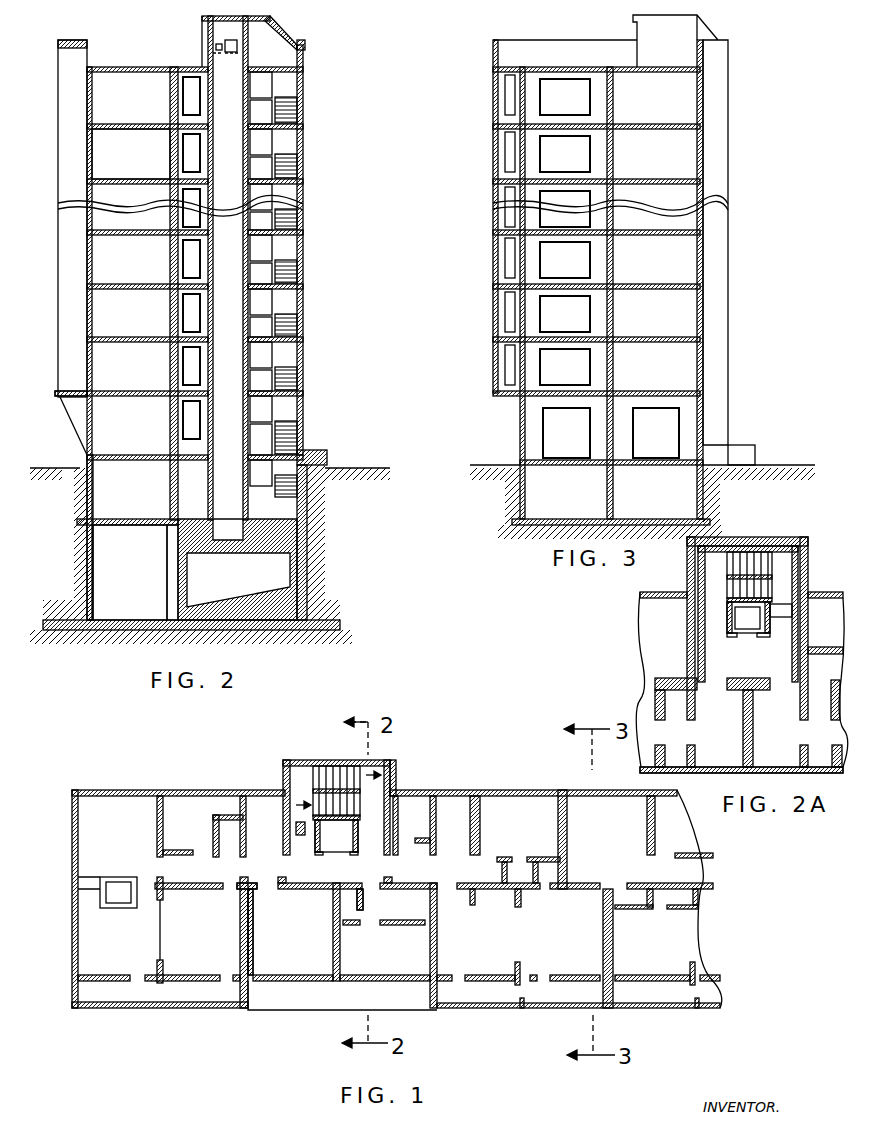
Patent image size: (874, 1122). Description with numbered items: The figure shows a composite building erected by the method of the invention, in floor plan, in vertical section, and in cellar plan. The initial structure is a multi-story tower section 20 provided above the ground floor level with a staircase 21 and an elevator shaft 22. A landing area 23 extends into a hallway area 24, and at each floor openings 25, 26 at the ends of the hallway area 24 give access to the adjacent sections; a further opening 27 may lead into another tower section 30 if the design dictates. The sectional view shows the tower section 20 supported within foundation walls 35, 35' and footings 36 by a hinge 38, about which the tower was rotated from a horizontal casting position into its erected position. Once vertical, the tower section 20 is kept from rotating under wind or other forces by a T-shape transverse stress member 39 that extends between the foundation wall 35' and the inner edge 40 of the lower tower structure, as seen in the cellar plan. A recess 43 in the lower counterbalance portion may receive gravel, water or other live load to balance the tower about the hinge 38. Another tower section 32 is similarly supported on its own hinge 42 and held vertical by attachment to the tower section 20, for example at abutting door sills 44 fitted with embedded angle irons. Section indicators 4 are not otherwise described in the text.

In FIG. 1, the door 4 is at (376, 883).
In FIG. 2, the tower section 20 is at (320, 320).
In FIG. 1, the tower section 20 is at (400, 770).
In FIG. 2, the staircase 21 is at (300, 166).
In FIG. 2A, the staircase 21 is at (757, 575).
In FIG. 1, the staircase 21 is at (337, 773).
In FIG. 2, the elevator shaft 22 is at (228, 257).
In FIG. 1, the elevator shaft 22 is at (350, 849).
In FIG. 1, the landing area 23 is at (367, 798).
In FIG. 1, the hallway area 24 is at (332, 880).
In FIG. 1, the opening 25 is at (388, 857).
In FIG. 1, the opening 26 is at (288, 858).
In FIG. 1, the opening 27 is at (377, 890).
In FIG. 1, the tower section 30 is at (352, 954).
In FIG. 2, the tower section 32 is at (106, 152).
In FIG. 1, the tower section 32 is at (264, 936).
In FIG. 2, the foundation wall 35 is at (338, 542).
In FIG. 2, the foundation wall 35' is at (60, 537).
In FIG. 2A, the foundation wall 35' is at (741, 781).
In FIG. 2, the footing 36 is at (268, 632).
In FIG. 2, the hinge 38 is at (328, 456).
In FIG. 2, the T-shape transverse stress member 39 is at (146, 561).
In FIG. 2A, the T-shape transverse stress member 39 is at (748, 741).
In FIG. 2, the inner edge of tower lower structure 40 is at (168, 583).
In FIG. 2A, the inner edge of tower lower structure 40 is at (752, 688).
In FIG. 2, the hinge 42 is at (86, 455).
In FIG. 2, the recess 43 is at (246, 585).
In FIG. 1, the door sill 44 is at (262, 885).